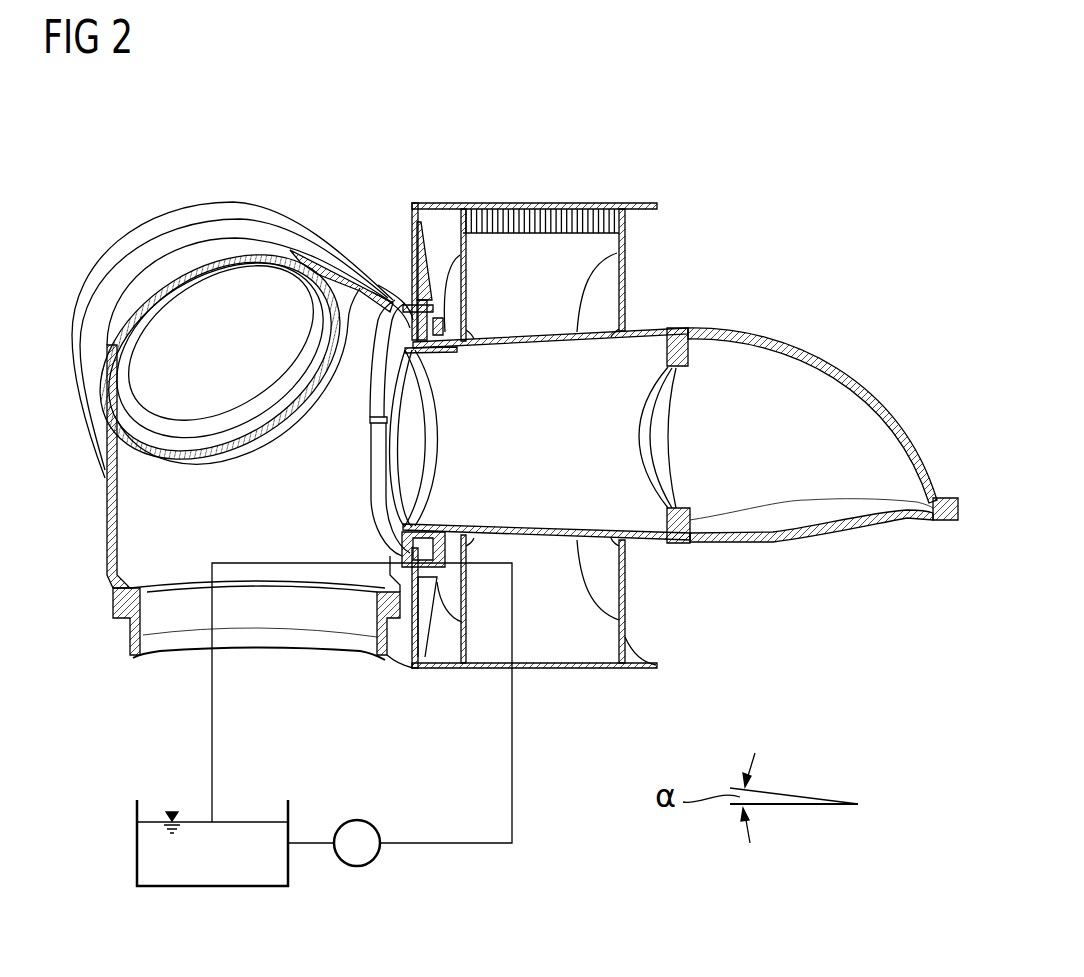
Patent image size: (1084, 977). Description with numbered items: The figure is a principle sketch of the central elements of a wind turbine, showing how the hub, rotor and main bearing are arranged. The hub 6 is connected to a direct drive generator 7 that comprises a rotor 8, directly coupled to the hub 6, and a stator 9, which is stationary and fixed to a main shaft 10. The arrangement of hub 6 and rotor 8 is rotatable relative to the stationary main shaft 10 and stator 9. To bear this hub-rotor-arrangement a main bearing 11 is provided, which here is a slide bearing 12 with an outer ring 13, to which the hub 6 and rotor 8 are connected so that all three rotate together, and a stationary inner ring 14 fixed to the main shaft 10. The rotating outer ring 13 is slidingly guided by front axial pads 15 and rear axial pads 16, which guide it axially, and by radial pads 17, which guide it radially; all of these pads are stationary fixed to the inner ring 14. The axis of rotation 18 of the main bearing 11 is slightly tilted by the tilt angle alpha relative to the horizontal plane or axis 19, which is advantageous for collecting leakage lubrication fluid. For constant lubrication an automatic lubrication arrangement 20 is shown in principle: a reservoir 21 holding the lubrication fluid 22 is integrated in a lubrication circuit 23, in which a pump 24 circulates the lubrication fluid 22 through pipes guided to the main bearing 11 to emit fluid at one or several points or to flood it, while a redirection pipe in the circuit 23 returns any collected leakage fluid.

The hub 6 is at (181, 220).
The direct drive generator 7 is at (704, 189).
The rotor 8 is at (532, 203).
The stator 9 is at (613, 222).
The main shaft 10 is at (850, 378).
The main bearing 11 is at (460, 466).
The slide bearing 12 is at (427, 447).
The outer ring 13 is at (418, 300).
The inner ring 14 is at (413, 492).
The front axial pads 15 is at (395, 308).
The rear axial pads 16 is at (452, 320).
The radial pads 17 is at (433, 349).
The axis of rotation 18 is at (797, 806).
The horizontal plane or axis 19 is at (797, 808).
The automatic lubrication arrangement 20 is at (116, 877).
The reservoir 21 is at (238, 888).
The lubrication fluid 22 is at (168, 872).
The lubrication circuit 23 is at (443, 845).
The pump 24 is at (357, 868).